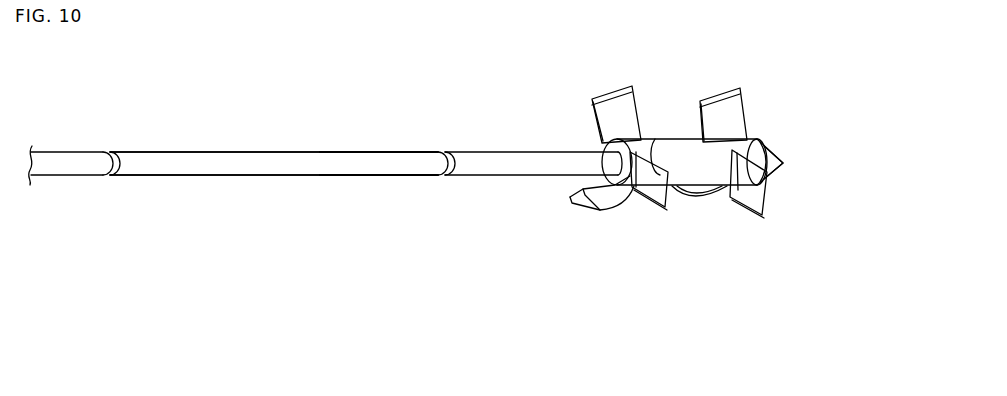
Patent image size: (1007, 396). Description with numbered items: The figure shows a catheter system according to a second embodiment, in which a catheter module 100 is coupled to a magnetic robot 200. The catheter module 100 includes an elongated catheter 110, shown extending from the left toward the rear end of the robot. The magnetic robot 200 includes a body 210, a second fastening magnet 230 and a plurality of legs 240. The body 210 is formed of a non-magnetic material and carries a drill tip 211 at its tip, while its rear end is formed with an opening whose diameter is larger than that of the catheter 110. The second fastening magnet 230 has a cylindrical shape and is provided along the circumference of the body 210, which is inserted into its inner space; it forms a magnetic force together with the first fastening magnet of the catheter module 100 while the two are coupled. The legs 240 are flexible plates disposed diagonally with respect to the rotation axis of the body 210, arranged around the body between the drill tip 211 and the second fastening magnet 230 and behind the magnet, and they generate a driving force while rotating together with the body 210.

The catheter module 100 is at (350, 191).
The catheter 110 is at (317, 158).
The magnetic robot 200 is at (690, 216).
The body 210 is at (748, 148).
The drill tip 211 is at (783, 153).
The second fastening magnet 230 is at (683, 150).
The leg 240 is at (757, 195).